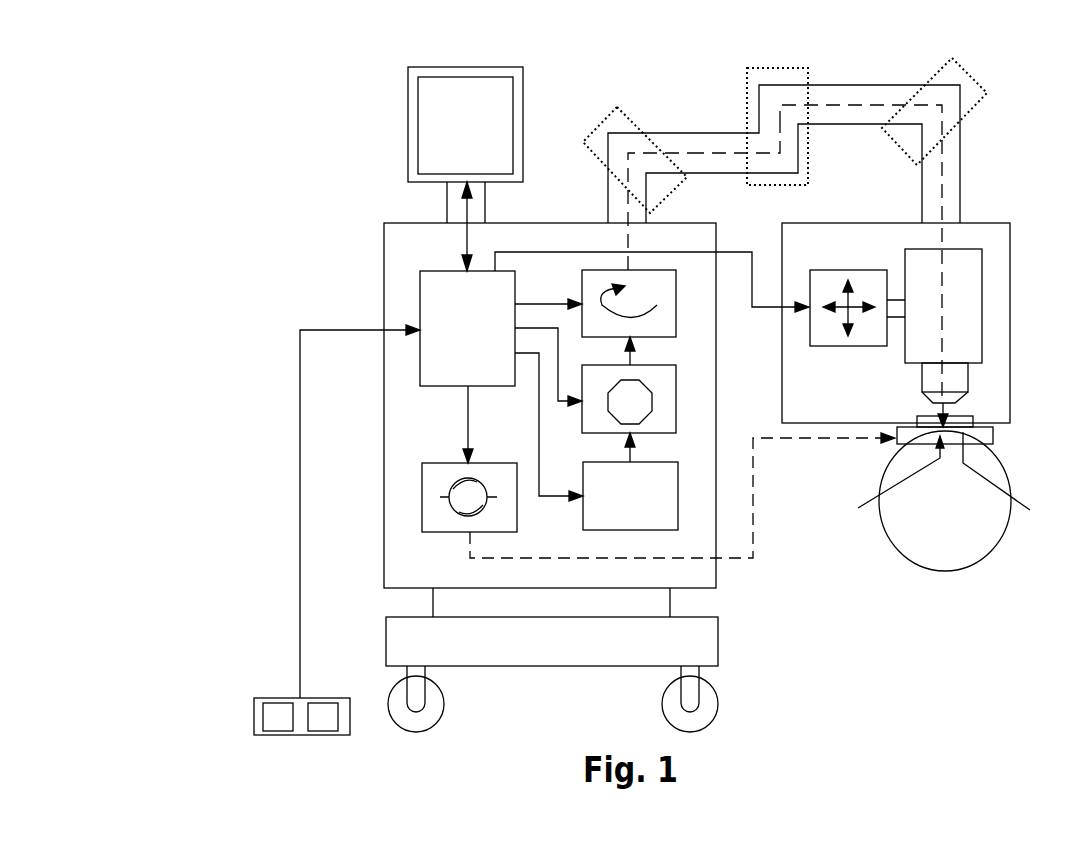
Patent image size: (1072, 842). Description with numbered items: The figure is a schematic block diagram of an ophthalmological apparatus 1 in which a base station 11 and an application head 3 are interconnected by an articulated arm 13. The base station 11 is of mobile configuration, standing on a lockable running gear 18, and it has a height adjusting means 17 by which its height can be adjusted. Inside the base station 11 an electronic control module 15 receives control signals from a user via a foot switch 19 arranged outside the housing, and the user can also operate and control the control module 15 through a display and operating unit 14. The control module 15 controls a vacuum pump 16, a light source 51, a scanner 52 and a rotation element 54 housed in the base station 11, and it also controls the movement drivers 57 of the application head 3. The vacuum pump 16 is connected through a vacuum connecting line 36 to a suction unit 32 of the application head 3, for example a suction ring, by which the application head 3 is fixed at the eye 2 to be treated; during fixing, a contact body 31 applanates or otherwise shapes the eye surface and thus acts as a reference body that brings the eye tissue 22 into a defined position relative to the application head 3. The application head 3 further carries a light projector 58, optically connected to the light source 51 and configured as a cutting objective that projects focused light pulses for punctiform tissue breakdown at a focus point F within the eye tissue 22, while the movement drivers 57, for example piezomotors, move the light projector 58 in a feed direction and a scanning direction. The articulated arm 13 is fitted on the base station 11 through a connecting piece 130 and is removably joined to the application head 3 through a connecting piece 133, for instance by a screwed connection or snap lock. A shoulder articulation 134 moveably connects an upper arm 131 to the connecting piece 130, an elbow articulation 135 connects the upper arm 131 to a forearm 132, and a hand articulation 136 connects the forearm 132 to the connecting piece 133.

The ophthalmological apparatus 1 is at (840, 605).
The eye 2 is at (987, 540).
The application head 3 is at (1000, 240).
The base station 11 is at (392, 252).
The articulated arm 13 is at (852, 132).
The display and operating unit 14 is at (427, 122).
The electronic control module 15 is at (428, 360).
The vacuum pump 16 is at (427, 508).
The height adjusting means 17 is at (663, 593).
The lockable running gear 18 is at (437, 705).
The foot switch 19 is at (253, 717).
The eye tissue 22 is at (1015, 481).
The contact body 31 is at (965, 415).
The suction unit 32 is at (993, 440).
The vacuum connecting line 36 is at (753, 460).
The light source 51 is at (670, 510).
The scanner 52 is at (667, 403).
The rotation element 54 is at (667, 315).
The movement drivers 57 is at (823, 282).
The light projector 58 is at (975, 310).
The connecting piece 130 is at (612, 196).
The upper arm 131 is at (700, 138).
The forearm 132 is at (855, 90).
The connecting piece 133 is at (955, 163).
The shoulder articulation 134 is at (608, 113).
The elbow articulation 135 is at (780, 75).
The hand articulation 136 is at (975, 90).
The focus point F is at (891, 481).